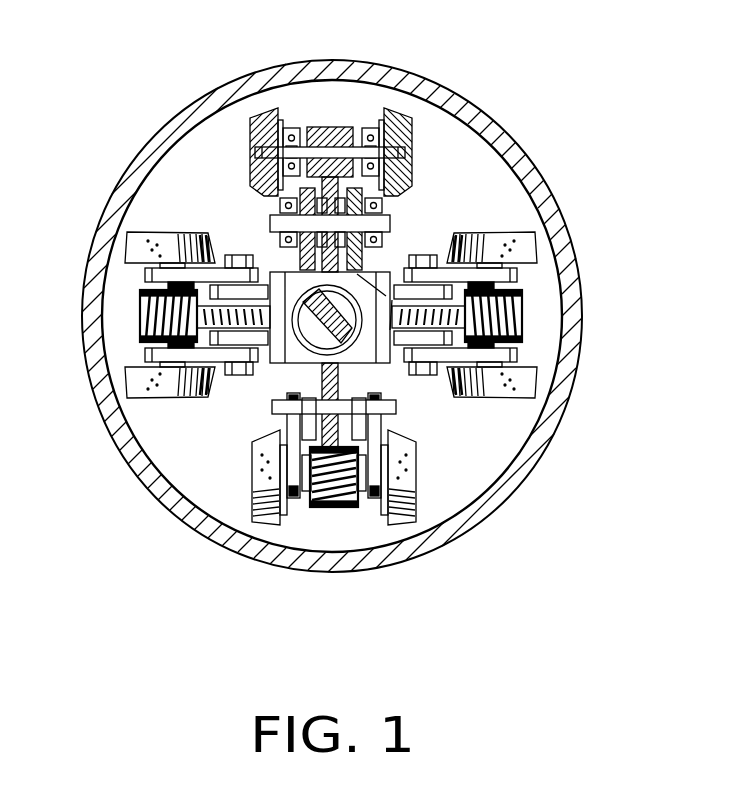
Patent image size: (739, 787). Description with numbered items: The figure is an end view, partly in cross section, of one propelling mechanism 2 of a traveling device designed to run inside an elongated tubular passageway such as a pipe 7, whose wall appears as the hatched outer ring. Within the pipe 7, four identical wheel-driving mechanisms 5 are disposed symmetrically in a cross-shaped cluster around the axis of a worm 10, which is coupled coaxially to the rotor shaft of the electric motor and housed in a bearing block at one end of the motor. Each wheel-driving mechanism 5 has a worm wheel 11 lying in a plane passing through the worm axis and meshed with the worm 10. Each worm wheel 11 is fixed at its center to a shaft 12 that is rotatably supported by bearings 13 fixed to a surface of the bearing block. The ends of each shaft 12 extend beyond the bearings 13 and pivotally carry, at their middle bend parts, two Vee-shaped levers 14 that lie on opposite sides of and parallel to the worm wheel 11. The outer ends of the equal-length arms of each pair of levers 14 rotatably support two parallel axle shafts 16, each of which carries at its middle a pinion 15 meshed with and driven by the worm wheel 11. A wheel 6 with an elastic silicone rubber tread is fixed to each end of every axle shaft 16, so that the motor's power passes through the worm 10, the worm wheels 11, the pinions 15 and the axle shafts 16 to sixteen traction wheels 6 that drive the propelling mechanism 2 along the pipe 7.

The propelling mechanism 2 is at (476, 427).
The wheel-driving mechanism 5 is at (364, 116).
The wheel 6 is at (250, 128).
The pipe 7 is at (510, 150).
The worm 10 is at (380, 272).
The worm wheel 11 is at (264, 266).
The shaft 12 is at (425, 268).
The bearing 13 is at (272, 266).
The Vee-shaped lever 14 is at (283, 125).
The pinion 15 is at (322, 127).
The axle shaft 16 is at (345, 135).